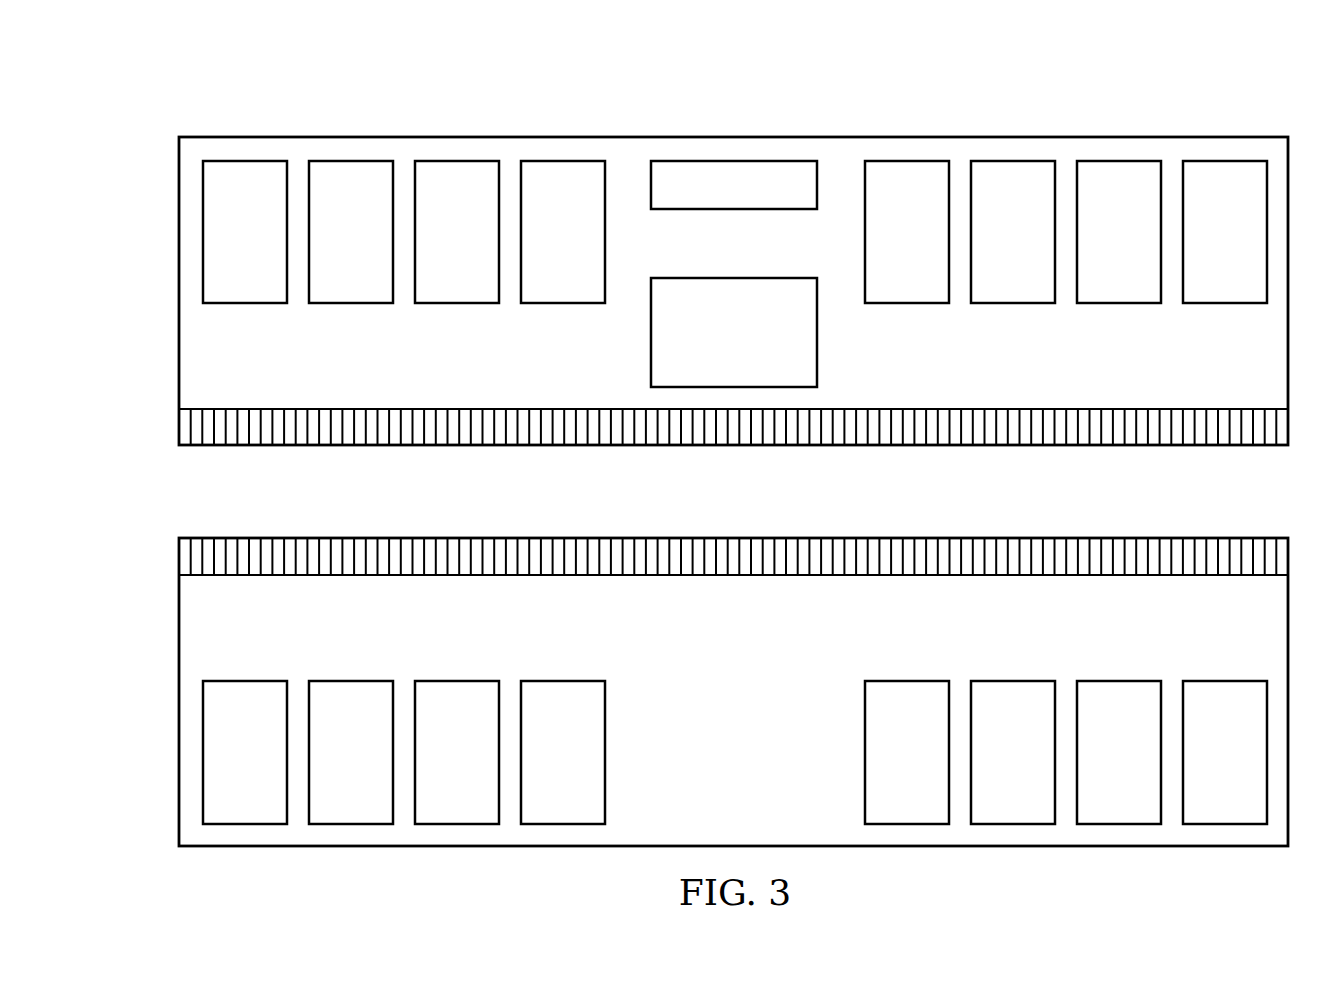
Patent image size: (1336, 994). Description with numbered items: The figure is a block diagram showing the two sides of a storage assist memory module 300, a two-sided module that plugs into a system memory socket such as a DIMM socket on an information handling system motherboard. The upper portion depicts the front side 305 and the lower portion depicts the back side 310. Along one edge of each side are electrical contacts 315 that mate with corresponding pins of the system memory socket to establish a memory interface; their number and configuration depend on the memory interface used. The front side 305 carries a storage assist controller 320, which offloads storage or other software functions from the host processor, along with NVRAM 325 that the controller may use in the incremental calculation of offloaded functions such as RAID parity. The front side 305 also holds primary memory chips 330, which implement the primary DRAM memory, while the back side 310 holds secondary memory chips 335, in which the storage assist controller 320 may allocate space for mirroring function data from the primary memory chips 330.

The storage assist memory module 300 is at (460, 98).
The front side 305 is at (962, 135).
The back side 310 is at (509, 849).
The electrical contacts 315 is at (315, 435).
The storage assist controller 320 is at (752, 278).
The NVRAM 325 is at (717, 209).
The primary memory chips 330 is at (1248, 246).
The secondary memory chips 335 is at (1248, 767).